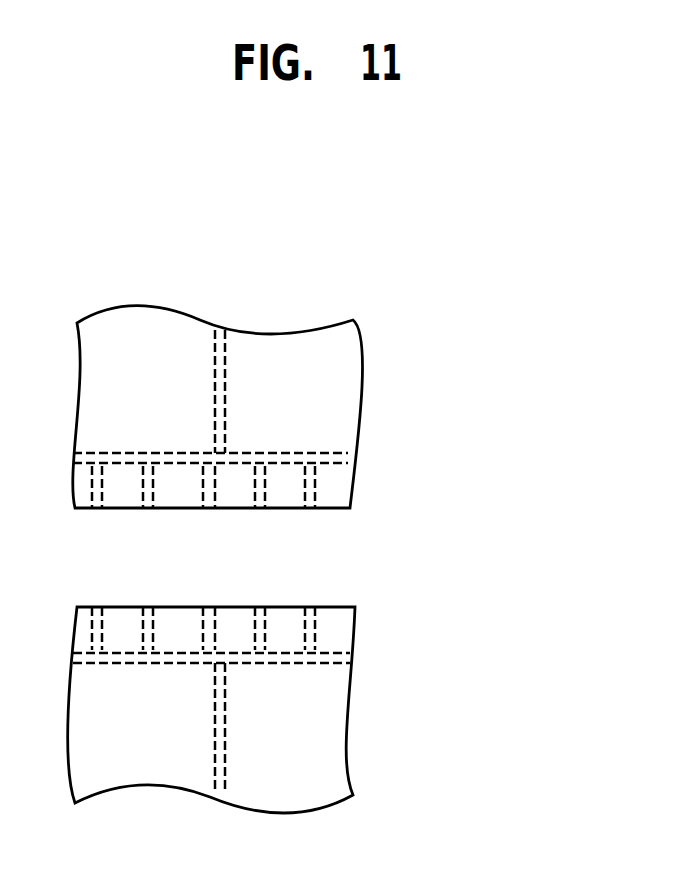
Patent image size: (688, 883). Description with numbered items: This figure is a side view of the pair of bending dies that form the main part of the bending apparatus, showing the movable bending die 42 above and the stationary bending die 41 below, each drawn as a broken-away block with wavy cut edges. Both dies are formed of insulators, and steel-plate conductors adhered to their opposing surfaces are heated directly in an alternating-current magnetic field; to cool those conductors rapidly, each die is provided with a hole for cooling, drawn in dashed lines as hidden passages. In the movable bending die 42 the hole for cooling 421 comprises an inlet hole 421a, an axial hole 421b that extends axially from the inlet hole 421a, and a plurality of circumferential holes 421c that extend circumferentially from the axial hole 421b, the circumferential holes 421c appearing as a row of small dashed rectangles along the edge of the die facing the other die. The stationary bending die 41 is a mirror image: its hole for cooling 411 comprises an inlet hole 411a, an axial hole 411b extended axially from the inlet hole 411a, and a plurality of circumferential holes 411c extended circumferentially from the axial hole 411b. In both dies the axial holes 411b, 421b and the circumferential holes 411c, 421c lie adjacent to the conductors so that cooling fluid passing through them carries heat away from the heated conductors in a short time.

The movable bending die 42 is at (358, 331).
The hole for cooling 421 is at (271, 353).
The inlet hole 421a is at (215, 330).
The axial hole 421b is at (300, 453).
The circumferential holes 421c is at (315, 480).
The stationary bending die 41 is at (347, 747).
The hole for cooling 411 is at (264, 770).
The inlet hole 411a is at (215, 785).
The axial hole 411b is at (290, 667).
The circumferential holes 411c is at (315, 622).